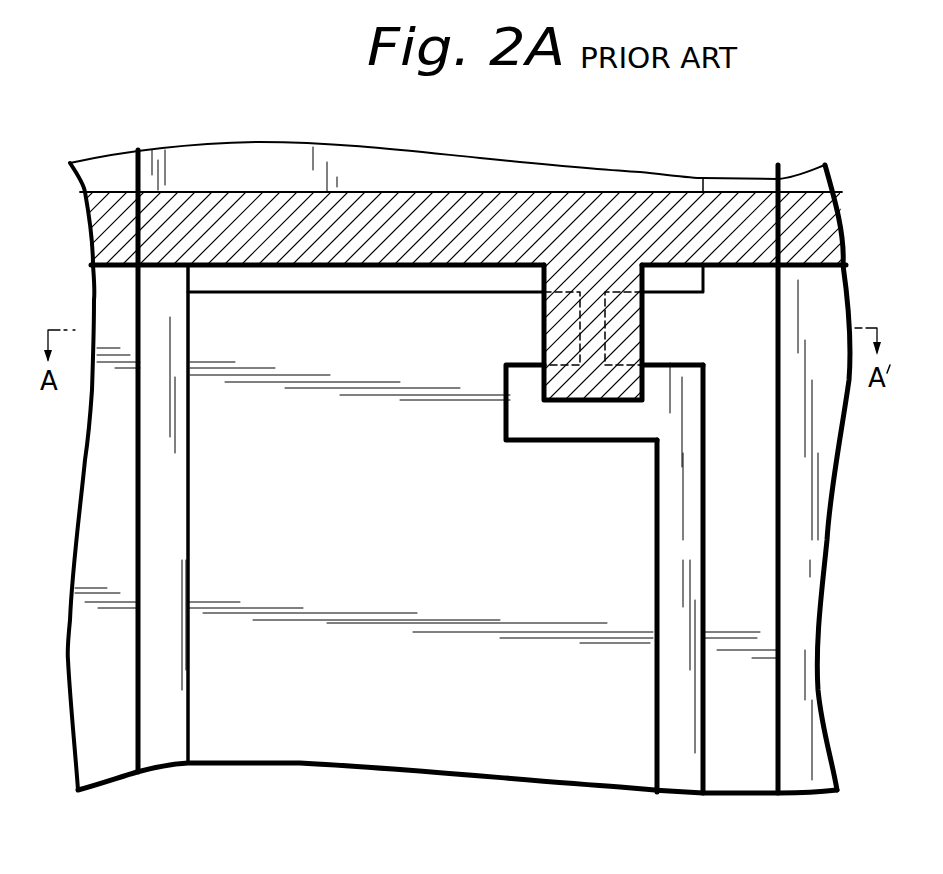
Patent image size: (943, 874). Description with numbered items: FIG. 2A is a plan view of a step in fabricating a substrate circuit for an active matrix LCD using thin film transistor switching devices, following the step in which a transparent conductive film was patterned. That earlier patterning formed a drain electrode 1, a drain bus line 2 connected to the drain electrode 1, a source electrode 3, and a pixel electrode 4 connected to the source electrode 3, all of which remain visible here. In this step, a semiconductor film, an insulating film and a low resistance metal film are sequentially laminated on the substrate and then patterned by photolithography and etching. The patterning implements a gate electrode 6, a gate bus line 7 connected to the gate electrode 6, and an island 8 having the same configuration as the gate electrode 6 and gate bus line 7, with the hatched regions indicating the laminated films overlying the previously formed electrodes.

The drain electrode 1 is at (658, 320).
The drain bus line 2 is at (738, 753).
The source electrode 3 is at (498, 318).
The pixel electrode 4 is at (217, 720).
The gate electrode 6 is at (643, 383).
The gate bus line 7 is at (832, 235).
The island 8 is at (642, 404).